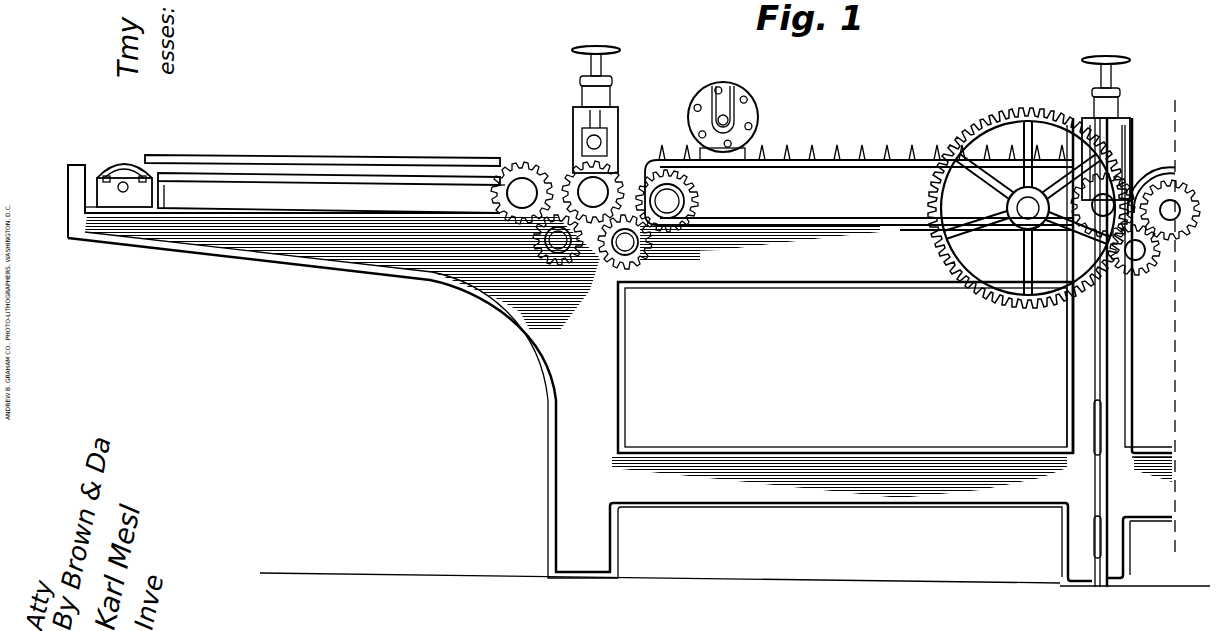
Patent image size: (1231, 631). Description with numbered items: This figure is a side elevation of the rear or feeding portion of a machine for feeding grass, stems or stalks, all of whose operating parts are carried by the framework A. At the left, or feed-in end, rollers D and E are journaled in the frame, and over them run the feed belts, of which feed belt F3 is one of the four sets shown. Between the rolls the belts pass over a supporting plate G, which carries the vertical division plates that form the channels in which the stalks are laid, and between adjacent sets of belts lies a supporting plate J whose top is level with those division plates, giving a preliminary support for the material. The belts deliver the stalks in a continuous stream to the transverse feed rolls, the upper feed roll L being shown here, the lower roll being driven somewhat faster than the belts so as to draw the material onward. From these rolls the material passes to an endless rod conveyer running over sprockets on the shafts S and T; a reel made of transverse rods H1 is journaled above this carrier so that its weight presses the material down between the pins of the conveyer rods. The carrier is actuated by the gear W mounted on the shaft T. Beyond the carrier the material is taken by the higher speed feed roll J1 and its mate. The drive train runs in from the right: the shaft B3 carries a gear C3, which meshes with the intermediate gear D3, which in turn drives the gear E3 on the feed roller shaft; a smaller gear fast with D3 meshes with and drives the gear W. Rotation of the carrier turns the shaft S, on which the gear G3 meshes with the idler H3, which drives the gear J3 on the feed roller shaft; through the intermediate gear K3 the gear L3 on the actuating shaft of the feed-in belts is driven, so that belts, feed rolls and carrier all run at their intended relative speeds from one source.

The framework A is at (830, 265).
The roller D is at (120, 167).
The feed belt F3 is at (135, 166).
The supporting plate J is at (322, 155).
The supporting plate G is at (304, 176).
The roller E is at (522, 192).
The feed roll L is at (523, 162).
The gear L3 is at (617, 143).
The gear J3 is at (612, 183).
The gear G3 is at (682, 195).
The shaft S is at (668, 201).
The reel rods H1 is at (750, 120).
The intermediate gear K3 is at (562, 252).
The idler gear H3 is at (648, 253).
The gear W is at (970, 128).
The shaft T is at (1026, 208).
The gear E3 is at (1098, 217).
The feed roll J1 is at (1130, 155).
The gear C3 is at (1168, 196).
The shaft B3 is at (1172, 210).
The intermediate gear D3 is at (1162, 258).